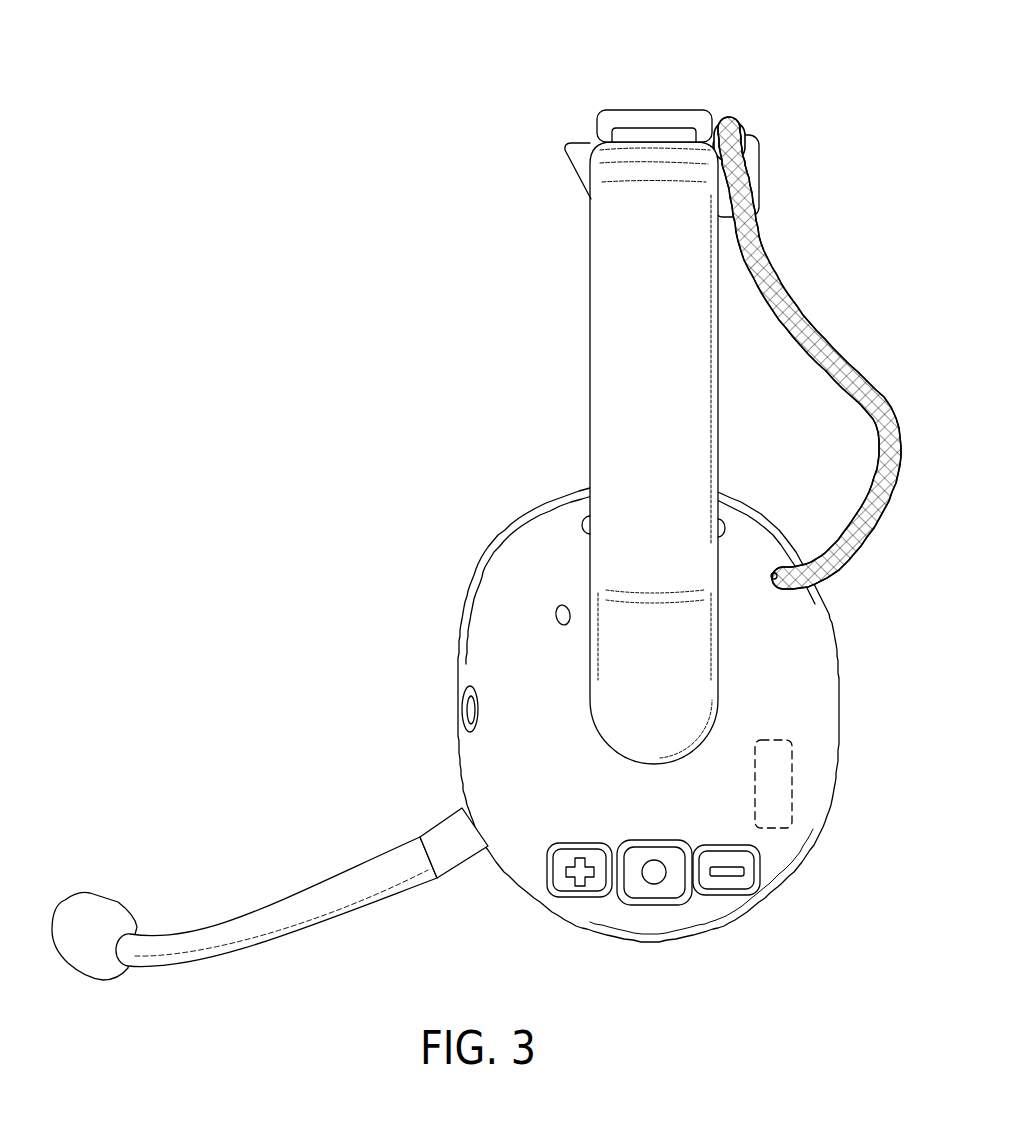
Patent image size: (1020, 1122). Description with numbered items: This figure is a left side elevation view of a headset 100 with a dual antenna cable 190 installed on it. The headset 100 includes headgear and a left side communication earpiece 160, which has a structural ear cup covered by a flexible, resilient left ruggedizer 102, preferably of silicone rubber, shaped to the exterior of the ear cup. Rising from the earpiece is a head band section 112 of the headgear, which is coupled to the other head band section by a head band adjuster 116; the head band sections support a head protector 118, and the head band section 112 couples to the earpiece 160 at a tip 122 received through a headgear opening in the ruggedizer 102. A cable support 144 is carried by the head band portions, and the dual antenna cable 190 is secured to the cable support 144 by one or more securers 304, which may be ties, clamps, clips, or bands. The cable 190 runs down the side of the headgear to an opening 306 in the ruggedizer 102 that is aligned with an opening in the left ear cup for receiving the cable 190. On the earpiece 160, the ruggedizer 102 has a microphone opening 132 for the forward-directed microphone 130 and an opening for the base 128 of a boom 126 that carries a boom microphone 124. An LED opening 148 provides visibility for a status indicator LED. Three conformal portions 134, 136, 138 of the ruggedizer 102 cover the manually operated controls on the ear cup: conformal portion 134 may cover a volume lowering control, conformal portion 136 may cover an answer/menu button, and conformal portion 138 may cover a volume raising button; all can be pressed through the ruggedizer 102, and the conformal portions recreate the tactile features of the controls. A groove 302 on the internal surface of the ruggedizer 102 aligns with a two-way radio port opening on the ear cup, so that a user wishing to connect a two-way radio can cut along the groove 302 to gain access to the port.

The headset 100 is at (245, 35).
The left ruggedizer 102 is at (522, 860).
The head band section 112 is at (635, 245).
The head band adjuster 116 is at (652, 110).
The head protector 118 is at (575, 150).
The tip 122 is at (648, 700).
The boom microphone 124 is at (93, 920).
The boom 126 is at (200, 938).
The base of boom 128 is at (450, 850).
The forward-directed microphone 130 is at (470, 712).
The microphone opening 132 is at (468, 690).
The conformal portion 134 is at (582, 518).
The conformal portion 136 is at (648, 882).
The conformal portion 138 is at (563, 880).
The cable support 144 is at (758, 170).
The LED opening 148 is at (556, 608).
The left side communication earpiece 160 is at (330, 660).
The dual antenna cable 190 is at (818, 366).
The groove 302 is at (790, 798).
The securer 304 is at (738, 123).
The opening 306 is at (775, 570).